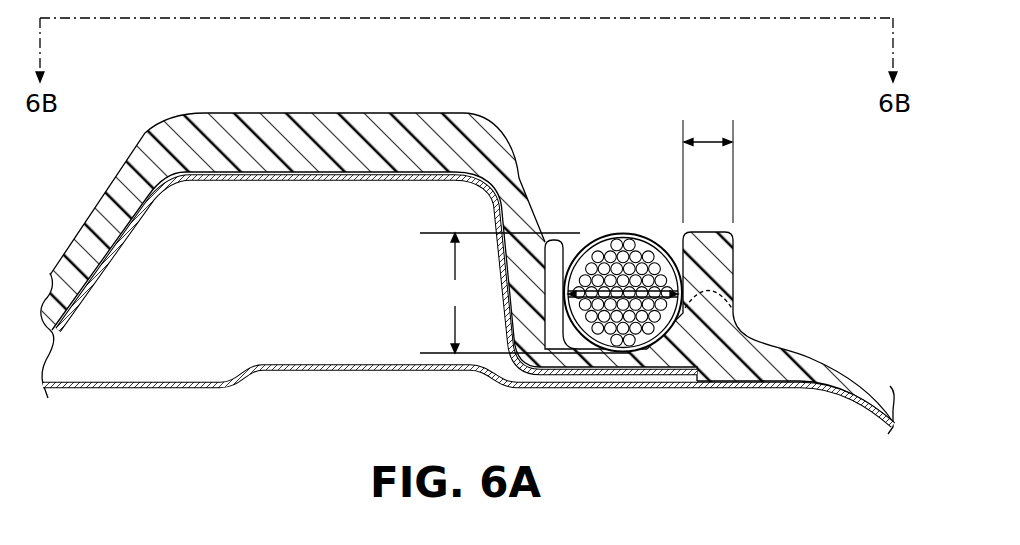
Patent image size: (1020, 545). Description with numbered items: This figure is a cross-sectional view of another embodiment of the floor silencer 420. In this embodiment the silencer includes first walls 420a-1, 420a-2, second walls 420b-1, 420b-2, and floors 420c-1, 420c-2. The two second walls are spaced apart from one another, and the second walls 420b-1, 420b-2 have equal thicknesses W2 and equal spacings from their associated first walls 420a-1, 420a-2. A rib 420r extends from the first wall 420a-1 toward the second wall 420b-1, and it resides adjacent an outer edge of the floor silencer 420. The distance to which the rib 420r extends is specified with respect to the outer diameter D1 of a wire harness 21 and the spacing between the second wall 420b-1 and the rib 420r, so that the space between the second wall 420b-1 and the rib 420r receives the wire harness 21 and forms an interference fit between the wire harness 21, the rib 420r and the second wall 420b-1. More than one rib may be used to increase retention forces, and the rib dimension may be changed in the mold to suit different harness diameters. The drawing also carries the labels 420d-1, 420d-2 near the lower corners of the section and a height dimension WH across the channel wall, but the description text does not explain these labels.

The floor silencer 420 is at (366, 102).
The first wall 420a-1 is at (562, 227).
The first wall 420a-2 is at (530, 210).
The second wall 420b-1 is at (712, 233).
The second wall 420b-2 is at (765, 268).
The floor 420c-1 is at (644, 401).
The floor 420c-2 is at (612, 350).
The first corner portion 420d-1 is at (463, 388).
The second corner portion 420d-2 is at (517, 352).
The rib 420r is at (550, 253).
The wire harness 21 is at (622, 232).
The outer diameter of wire harness D1 is at (612, 293).
The wall height WH is at (525, 293).
The thickness of second wall W2 is at (708, 170).